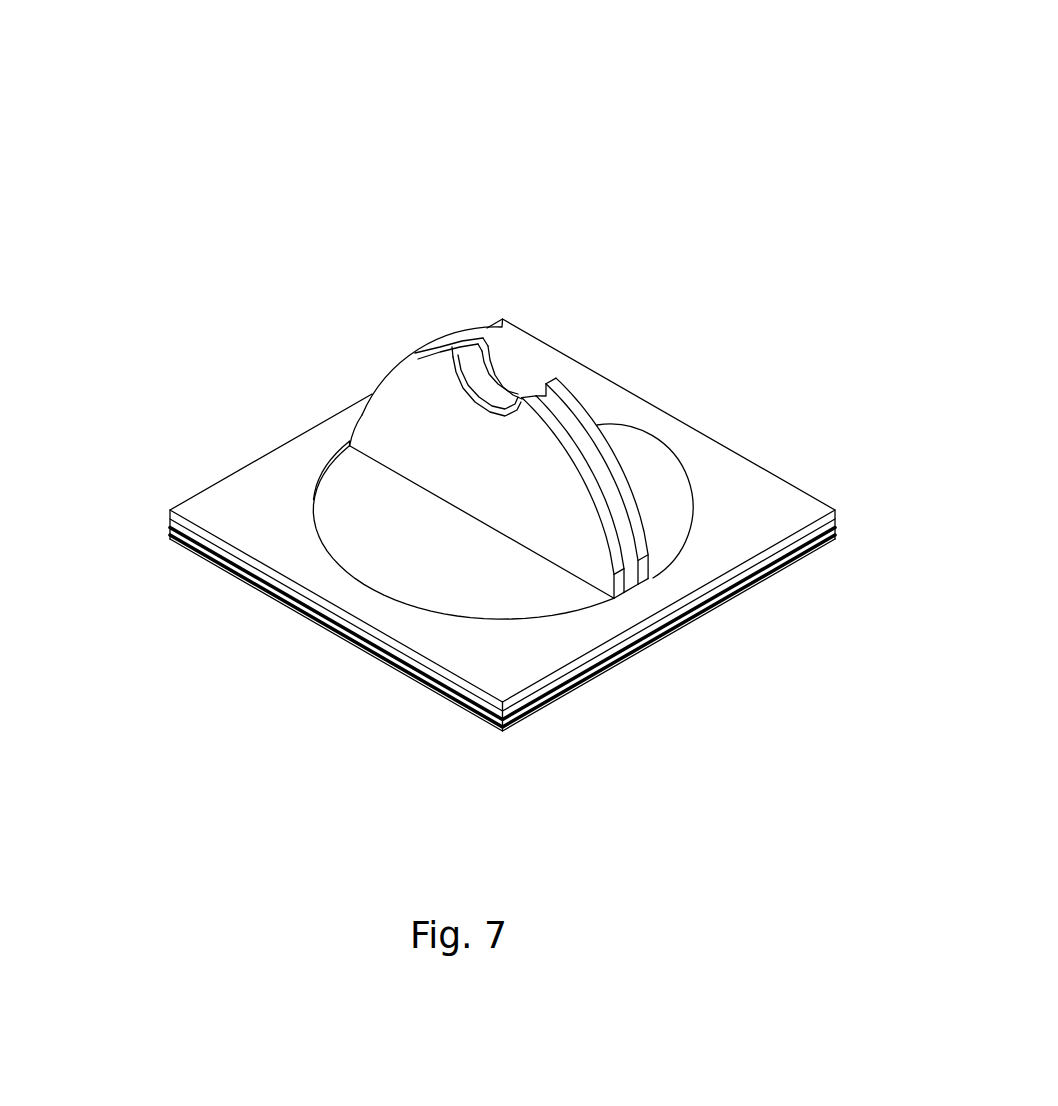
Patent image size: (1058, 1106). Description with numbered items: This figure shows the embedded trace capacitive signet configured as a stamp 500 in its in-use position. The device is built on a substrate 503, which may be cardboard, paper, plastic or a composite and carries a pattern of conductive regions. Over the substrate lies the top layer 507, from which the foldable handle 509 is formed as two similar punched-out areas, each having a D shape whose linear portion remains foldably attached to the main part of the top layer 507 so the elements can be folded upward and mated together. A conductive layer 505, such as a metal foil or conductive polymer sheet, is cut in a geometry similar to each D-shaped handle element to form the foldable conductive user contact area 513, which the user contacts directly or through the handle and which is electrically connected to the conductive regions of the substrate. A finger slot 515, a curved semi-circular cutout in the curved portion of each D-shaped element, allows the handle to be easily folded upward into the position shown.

The embedded trace capacitive signet configured as a stamp 500 is at (476, 390).
The substrate 503 is at (502, 640).
The conductive layer 505 is at (765, 496).
The top layer 507 is at (426, 510).
The foldable handle 509 is at (661, 455).
The foldable conductive user contact area 513 is at (398, 469).
The finger slot 515 is at (572, 321).